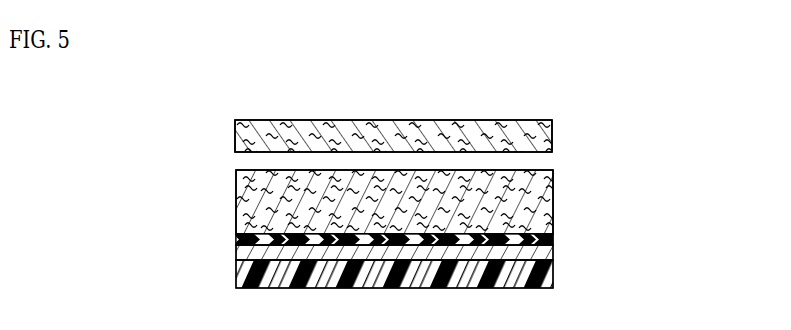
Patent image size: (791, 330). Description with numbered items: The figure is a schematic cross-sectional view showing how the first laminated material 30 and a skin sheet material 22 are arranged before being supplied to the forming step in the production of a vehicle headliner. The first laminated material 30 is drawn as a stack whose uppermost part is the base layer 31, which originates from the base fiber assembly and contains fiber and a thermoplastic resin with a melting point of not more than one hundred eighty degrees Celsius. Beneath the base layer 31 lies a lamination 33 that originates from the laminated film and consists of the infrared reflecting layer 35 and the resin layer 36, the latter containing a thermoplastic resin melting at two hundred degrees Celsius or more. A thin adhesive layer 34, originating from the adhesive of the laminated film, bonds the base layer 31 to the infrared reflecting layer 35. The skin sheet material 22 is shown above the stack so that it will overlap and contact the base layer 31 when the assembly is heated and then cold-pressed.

The skin sheet material 22 is at (552, 145).
The first laminated material 30 is at (421, 240).
The base layer 31 is at (553, 218).
The lamination 33 is at (391, 258).
The adhesive layer 34 is at (238, 239).
The infrared reflecting layer 35 is at (240, 252).
The resin layer 36 is at (240, 265).